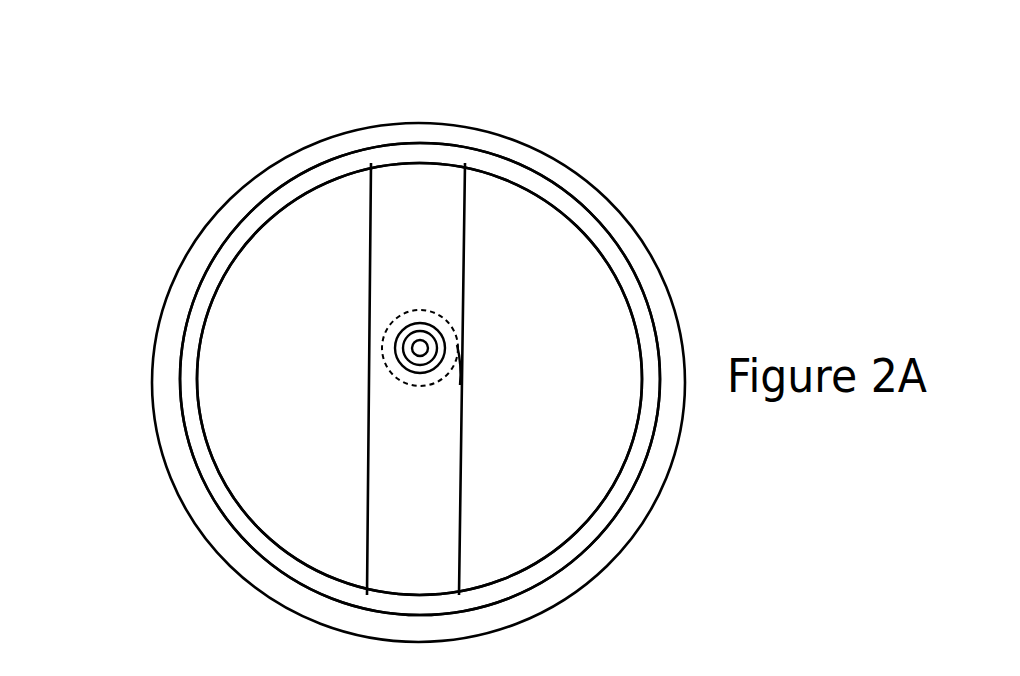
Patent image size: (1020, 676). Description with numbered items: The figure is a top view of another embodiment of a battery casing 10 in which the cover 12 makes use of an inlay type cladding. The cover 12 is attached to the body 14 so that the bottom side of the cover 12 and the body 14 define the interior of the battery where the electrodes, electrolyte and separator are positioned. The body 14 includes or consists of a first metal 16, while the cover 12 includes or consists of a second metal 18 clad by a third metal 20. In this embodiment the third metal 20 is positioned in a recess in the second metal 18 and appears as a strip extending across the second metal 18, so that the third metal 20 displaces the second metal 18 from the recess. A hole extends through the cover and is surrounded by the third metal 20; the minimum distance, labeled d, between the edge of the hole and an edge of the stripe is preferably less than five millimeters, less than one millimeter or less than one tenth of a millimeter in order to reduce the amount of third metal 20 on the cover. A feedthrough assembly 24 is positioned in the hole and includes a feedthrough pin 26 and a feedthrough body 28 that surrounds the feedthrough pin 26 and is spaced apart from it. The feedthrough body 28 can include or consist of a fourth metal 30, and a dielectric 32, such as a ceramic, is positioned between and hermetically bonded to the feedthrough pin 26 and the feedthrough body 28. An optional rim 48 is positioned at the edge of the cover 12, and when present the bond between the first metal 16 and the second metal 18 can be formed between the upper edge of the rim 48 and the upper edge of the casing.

The ball assembly 10 is at (93, 232).
The cover 12 is at (277, 192).
The body 14 is at (400, 122).
The first metal 16 is at (162, 375).
The second metal 18 is at (252, 440).
The third metal 20 is at (392, 453).
The feedthrough assembly 24 is at (408, 325).
The feedthrough pin 26 is at (417, 355).
The feedthrough body 28 is at (433, 328).
The fourth metal 30 is at (397, 347).
The dielectric 32 is at (410, 352).
The rim 48 is at (195, 350).
The minimum distance d is at (465, 385).